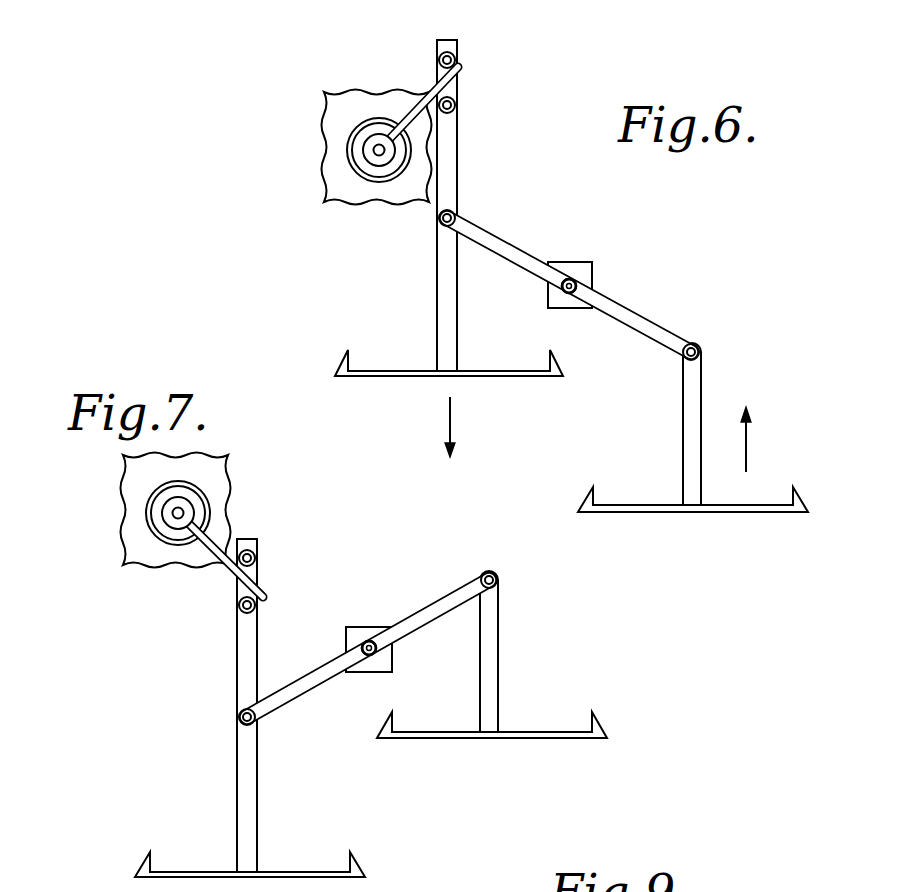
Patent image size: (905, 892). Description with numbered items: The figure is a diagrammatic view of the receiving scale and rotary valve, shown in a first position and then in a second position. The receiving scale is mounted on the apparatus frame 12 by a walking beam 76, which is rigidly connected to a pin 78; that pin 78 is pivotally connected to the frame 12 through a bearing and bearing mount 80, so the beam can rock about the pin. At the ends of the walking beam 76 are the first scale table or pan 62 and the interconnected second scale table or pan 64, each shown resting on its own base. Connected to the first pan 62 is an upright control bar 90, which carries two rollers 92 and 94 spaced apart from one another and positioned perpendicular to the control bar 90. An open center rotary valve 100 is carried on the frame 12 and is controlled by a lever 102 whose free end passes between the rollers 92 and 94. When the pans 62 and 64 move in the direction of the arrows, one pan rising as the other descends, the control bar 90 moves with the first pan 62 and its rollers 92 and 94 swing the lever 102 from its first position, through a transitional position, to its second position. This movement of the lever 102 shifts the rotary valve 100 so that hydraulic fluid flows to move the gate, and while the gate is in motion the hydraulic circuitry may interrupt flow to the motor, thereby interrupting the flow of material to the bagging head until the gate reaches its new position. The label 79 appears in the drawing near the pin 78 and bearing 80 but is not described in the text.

In FIG. 6, the apparatus frame 12 is at (354, 100).
In FIG. 7, the apparatus frame 12 is at (137, 483).
In FIG. 6, the open center rotary valve 100 is at (347, 150).
In FIG. 7, the open center rotary valve 100 is at (152, 524).
In FIG. 6, the lever 102 is at (457, 76).
In FIG. 7, the lever 102 is at (228, 578).
In FIG. 6, the control bar 90 is at (453, 170).
In FIG. 7, the control bar 90 is at (253, 807).
In FIG. 6, the roller 92 is at (451, 53).
In FIG. 7, the roller 92 is at (249, 538).
In FIG. 6, the roller 94 is at (453, 121).
In FIG. 7, the roller 94 is at (242, 615).
In FIG. 6, the walking beam 76 is at (655, 327).
In FIG. 7, the walking beam 76 is at (432, 608).
In FIG. 6, the pin 78 is at (575, 290).
In FIG. 7, the pin 78 is at (370, 656).
In FIG. 6, the pivot bearing 79 is at (567, 290).
In FIG. 7, the pivot bearing 79 is at (360, 648).
In FIG. 6, the bearing and bearing mount 80 is at (570, 262).
In FIG. 7, the bearing and bearing mount 80 is at (370, 627).
In FIG. 6, the first scale table or pan 62 is at (397, 376).
In FIG. 7, the first scale table or pan 62 is at (202, 872).
In FIG. 6, the second scale table or pan 64 is at (650, 505).
In FIG. 7, the second scale table or pan 64 is at (532, 738).